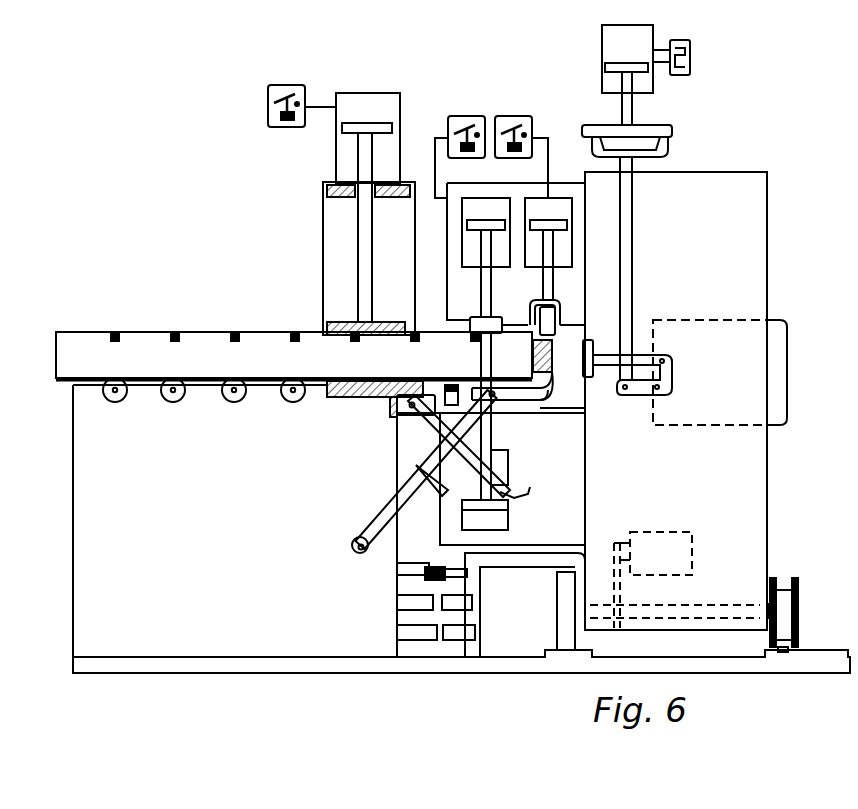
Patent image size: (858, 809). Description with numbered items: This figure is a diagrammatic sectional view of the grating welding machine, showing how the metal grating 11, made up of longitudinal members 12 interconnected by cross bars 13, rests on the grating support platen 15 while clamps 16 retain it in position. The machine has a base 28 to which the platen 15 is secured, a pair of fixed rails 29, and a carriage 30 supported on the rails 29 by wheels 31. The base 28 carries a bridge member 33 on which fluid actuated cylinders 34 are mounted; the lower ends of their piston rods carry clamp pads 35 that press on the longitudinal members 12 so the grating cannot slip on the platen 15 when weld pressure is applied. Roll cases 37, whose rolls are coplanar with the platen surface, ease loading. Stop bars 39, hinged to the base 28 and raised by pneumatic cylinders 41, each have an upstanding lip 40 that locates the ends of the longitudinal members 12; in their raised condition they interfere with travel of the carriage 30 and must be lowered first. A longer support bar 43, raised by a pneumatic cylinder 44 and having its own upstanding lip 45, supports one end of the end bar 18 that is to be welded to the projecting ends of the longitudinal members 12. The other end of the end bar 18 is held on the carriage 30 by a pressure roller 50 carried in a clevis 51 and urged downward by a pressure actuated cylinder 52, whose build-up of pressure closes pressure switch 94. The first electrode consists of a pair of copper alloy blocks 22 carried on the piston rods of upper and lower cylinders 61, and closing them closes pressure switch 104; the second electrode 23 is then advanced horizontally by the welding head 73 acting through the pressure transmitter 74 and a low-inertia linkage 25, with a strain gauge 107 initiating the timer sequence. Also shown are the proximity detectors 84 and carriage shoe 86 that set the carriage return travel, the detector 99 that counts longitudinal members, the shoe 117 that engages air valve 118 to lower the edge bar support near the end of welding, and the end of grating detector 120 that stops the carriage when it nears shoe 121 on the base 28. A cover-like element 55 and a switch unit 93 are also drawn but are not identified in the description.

The metal grating 11 is at (203, 324).
The longitudinal members 12 is at (256, 345).
The cross bars 13 is at (173, 333).
The grating support platen 15 is at (336, 398).
The clamps 16 is at (334, 319).
The end bar 18 is at (533, 353).
The blocks 22 is at (484, 334).
The second electrode 23 is at (590, 370).
The linkage 25 is at (667, 398).
The base 28 is at (257, 645).
The fixed rails 29 is at (580, 655).
The carriage 30 is at (768, 495).
The wheels 31 is at (562, 597).
The bridge member 33 is at (323, 193).
The fluid actuated cylinders 34 is at (390, 107).
The clamp pads 35 is at (382, 322).
The roll cases 37 is at (170, 409).
The stop bars 39 is at (510, 511).
The lip 40 is at (528, 492).
The pneumatic cylinders 41 is at (410, 508).
The support bar 43 is at (525, 400).
The pneumatic cylinder 44 is at (390, 505).
The upstanding lip 45 is at (553, 376).
The pressure roller 50 is at (557, 318).
The clevis 51 is at (556, 301).
The pressure actuated cylinder 52 is at (550, 205).
The cover 55 is at (786, 345).
The upper and lower cylinders 61 is at (485, 210).
The welding head 73 is at (648, 82).
The pressure transmitter 74 is at (678, 135).
The proximity detectors 84 is at (397, 603).
The shoe 86 is at (462, 603).
The switch 93 is at (292, 85).
The pressure switch 94 is at (527, 116).
The detector 99 is at (450, 386).
The pressure switch 104 is at (453, 116).
The strain gauge 107 is at (690, 48).
The shoe 117 is at (460, 572).
The air valve 118 is at (397, 569).
The end of grating detector 120 is at (455, 632).
The shoe 121 is at (415, 632).